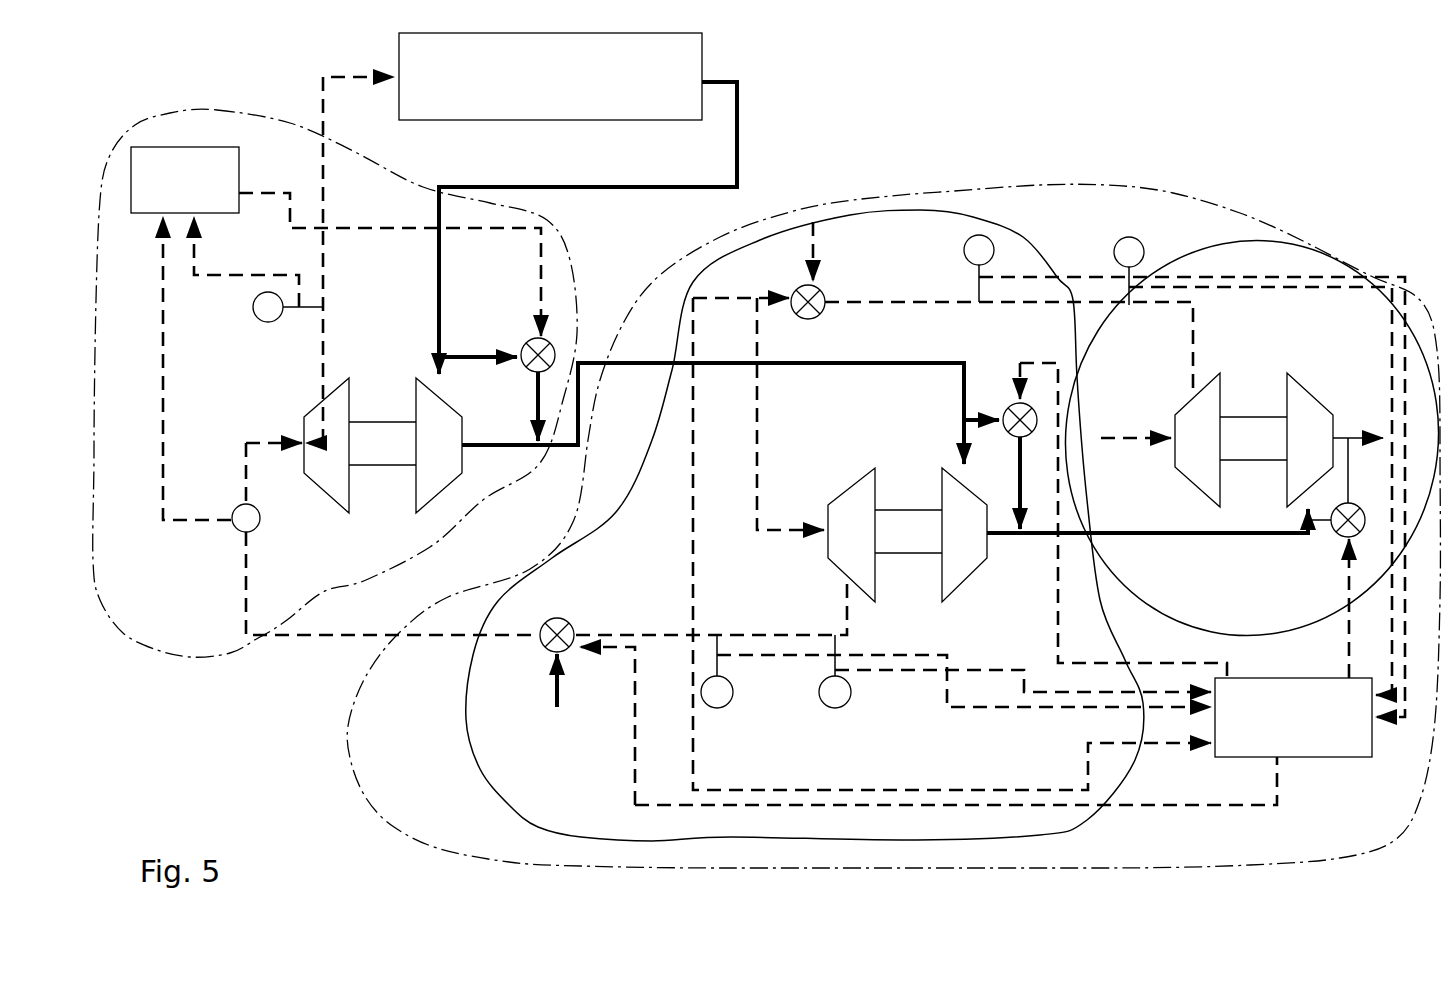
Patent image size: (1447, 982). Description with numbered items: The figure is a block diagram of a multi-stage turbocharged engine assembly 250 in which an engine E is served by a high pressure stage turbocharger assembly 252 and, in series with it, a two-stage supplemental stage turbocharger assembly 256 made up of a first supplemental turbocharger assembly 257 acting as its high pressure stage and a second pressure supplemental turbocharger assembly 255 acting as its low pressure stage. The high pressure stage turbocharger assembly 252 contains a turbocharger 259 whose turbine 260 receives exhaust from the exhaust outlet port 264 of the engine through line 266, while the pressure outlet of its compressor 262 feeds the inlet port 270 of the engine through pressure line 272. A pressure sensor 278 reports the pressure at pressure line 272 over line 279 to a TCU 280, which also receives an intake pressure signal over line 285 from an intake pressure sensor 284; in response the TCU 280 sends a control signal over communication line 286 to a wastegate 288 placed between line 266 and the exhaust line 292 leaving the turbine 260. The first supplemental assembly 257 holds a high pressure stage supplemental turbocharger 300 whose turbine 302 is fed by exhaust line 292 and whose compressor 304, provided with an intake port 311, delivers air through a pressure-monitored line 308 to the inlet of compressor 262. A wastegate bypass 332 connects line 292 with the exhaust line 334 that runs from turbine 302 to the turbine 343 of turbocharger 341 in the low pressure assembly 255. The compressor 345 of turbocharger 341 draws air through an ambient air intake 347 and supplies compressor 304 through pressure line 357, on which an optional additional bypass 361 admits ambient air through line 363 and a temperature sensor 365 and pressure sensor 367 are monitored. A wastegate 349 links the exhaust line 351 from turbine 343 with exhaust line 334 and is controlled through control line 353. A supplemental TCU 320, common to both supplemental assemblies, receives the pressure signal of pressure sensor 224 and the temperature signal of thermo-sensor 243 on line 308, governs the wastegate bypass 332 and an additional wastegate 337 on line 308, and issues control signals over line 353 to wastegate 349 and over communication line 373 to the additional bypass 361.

The pressure sensor 224 is at (722, 708).
The thermo-sensor 243 is at (838, 708).
The multi-stage turbocharged engine assembly 250 is at (855, 182).
The high pressure stage turbocharger assembly 252 is at (178, 664).
The second pressure supplemental turbocharger assembly 255 is at (1322, 236).
The supplemental stage turbocharger assembly 256 is at (414, 846).
The first supplemental turbocharger assembly 257 is at (536, 832).
The turbocharger 259 is at (376, 408).
The turbine 260 is at (416, 480).
The compressor 262 is at (326, 492).
The exhaust outlet port 264 is at (706, 92).
The line 266 is at (742, 172).
The inlet port 270 is at (396, 75).
The pressure line 272 is at (326, 262).
The pressure sensor 278 is at (262, 316).
The line 279 is at (232, 275).
The TCU (Turbocharger Control Unit) 280 is at (240, 153).
The intake pressure sensor 284 is at (238, 526).
The line 285 is at (165, 398).
The communication line 286 is at (537, 297).
The wastegate 288 is at (530, 372).
The exhaust line 292 is at (655, 367).
The high pressure stage supplemental turbocharger 300 is at (910, 496).
The turbine 302 is at (950, 590).
The compressor 304 is at (838, 565).
The pressure-monitored line 308 is at (441, 639).
The intake port 311 is at (837, 527).
The supplemental TCU (Turbocharger Control Unit) 320 is at (1305, 758).
The wastegate bypass 332 is at (1008, 395).
The exhaust line 334 is at (1140, 538).
The additional wastegate 337 is at (548, 652).
The turbocharger 341 is at (1253, 392).
The turbine 343 is at (1298, 382).
The compressor 345 is at (1198, 483).
The ambient air intake 347 is at (1170, 428).
The wastegate 349 is at (1338, 535).
The line 351 is at (1378, 430).
The control line 353 is at (1347, 595).
The pressure line 357 is at (893, 300).
The additional bypass 361 is at (815, 315).
The line 363 is at (815, 244).
The temperature sensor 365 is at (982, 243).
The pressure sensor 367 is at (1132, 245).
The communication line 373 is at (692, 518).